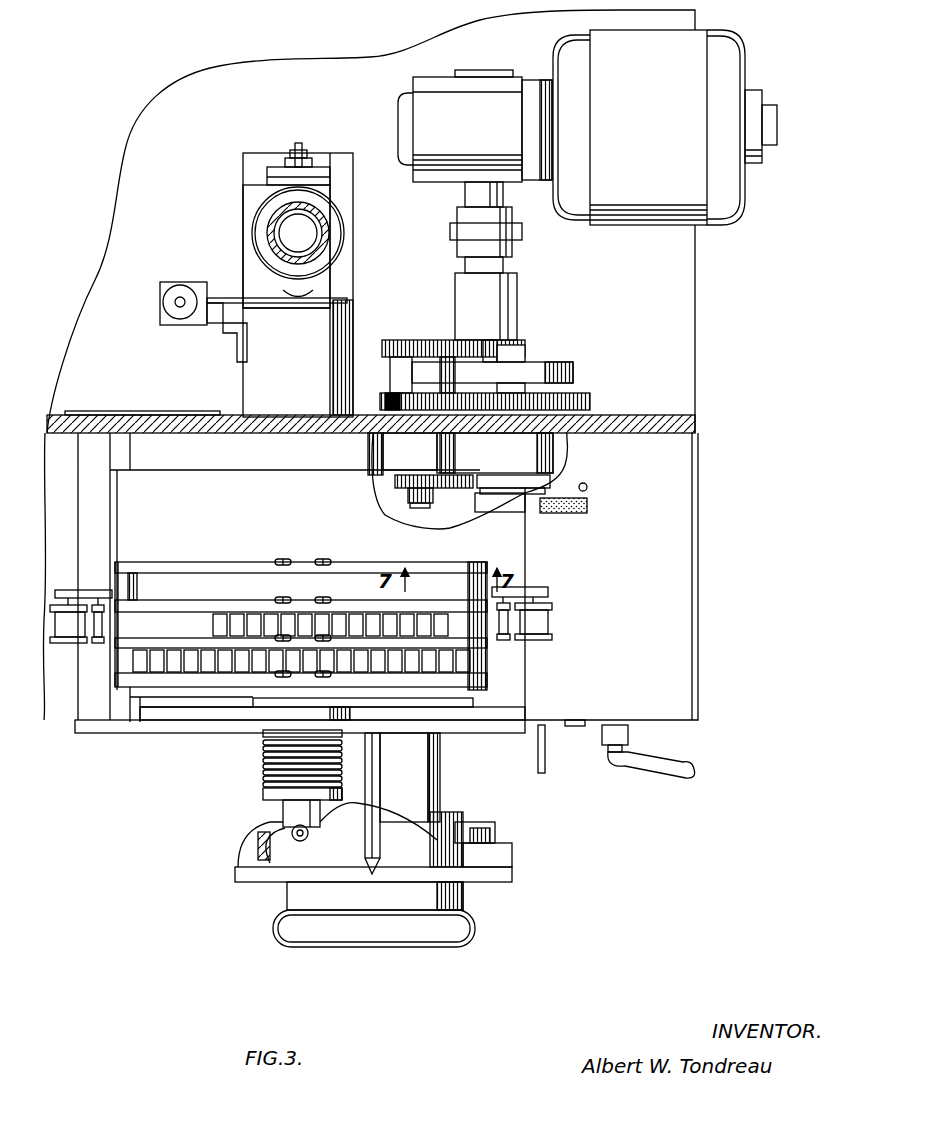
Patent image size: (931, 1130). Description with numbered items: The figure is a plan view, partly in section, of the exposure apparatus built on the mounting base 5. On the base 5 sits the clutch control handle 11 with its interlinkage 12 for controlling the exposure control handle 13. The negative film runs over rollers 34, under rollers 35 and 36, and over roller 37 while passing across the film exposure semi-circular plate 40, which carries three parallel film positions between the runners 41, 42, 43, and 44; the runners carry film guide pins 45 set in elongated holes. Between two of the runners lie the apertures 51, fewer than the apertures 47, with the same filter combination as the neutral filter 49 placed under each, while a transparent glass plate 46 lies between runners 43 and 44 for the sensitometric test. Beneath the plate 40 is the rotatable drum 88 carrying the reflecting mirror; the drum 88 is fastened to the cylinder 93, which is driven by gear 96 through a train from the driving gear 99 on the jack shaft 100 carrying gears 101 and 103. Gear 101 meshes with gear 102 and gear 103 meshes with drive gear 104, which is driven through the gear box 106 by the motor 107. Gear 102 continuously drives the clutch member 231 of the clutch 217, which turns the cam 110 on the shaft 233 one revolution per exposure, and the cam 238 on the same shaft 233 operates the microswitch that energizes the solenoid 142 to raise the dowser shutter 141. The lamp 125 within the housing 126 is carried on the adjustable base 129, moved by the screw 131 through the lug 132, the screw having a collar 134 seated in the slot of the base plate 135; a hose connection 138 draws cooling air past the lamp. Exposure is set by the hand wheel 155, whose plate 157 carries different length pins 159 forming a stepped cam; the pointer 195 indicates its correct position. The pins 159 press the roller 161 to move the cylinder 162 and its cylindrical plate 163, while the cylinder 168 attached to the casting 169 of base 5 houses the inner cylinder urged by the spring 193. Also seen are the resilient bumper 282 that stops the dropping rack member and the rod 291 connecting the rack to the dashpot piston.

The mounting base 5 is at (685, 675).
The clutch control handle 11 is at (682, 772).
The interlinkage 12 is at (597, 727).
The exposure control handle 13 is at (538, 770).
The rollers 34 is at (68, 645).
The rollers 35 is at (99, 645).
The rollers 36 is at (505, 645).
The roller 37 is at (540, 645).
The film exposure semi-circular plate 40 is at (203, 468).
The runner 41 is at (170, 680).
The runner 42 is at (156, 642).
The runner 43 is at (166, 608).
The runner 44 is at (185, 561).
The film guide pins 45 is at (323, 559).
The transparent glass plate 46 is at (348, 578).
The apertures 47 is at (222, 672).
The neutral filter 49 is at (292, 664).
The apertures 51 is at (236, 615).
The rotatable drum 88 is at (148, 696).
The cylinder 93 is at (412, 508).
The gear 96 is at (408, 497).
The driving gear 99 is at (395, 481).
The jack shaft 100 is at (408, 369).
The gear 101 is at (398, 394).
The gear 102 is at (592, 402).
The gear 103 is at (400, 340).
The drive gear 104 is at (522, 348).
The gear box 106 is at (475, 126).
The motor 107 is at (665, 127).
The cam 110 is at (575, 369).
The lamp 125 is at (318, 237).
The housing 126 is at (330, 210).
The adjustable base 129 is at (268, 189).
The screw 131 is at (299, 144).
The lug 132 is at (311, 179).
The collar 134 is at (290, 160).
The base plate 135 is at (254, 160).
The hose connection 138 is at (270, 236).
The dowser shutter 141 is at (262, 304).
The solenoid 142 is at (178, 283).
The hand wheel 155 is at (440, 946).
The plate 157 is at (237, 876).
The pins 159 is at (505, 834).
The roller 161 is at (310, 838).
The cylinder 162 is at (283, 812).
The cylindrical plate 163 is at (352, 812).
The cylinder 168 is at (268, 742).
The casting 169 is at (232, 733).
The spring 193 is at (263, 789).
The pointer 195 is at (380, 752).
The clutch 217 is at (520, 497).
The clutch member 231 is at (540, 490).
The shaft 233 is at (516, 386).
The cam 238 is at (490, 350).
The resilient bumper 282 is at (590, 506).
The rod 291 is at (588, 486).